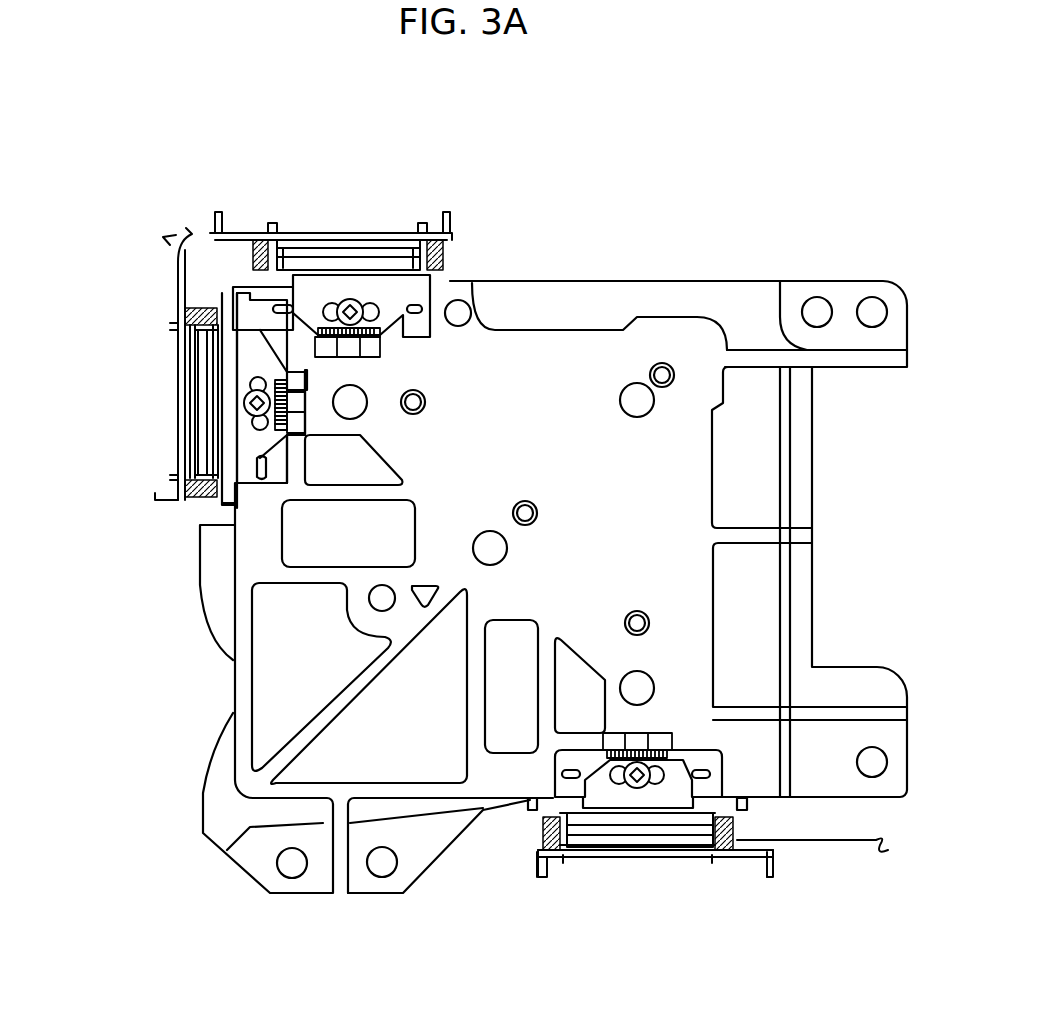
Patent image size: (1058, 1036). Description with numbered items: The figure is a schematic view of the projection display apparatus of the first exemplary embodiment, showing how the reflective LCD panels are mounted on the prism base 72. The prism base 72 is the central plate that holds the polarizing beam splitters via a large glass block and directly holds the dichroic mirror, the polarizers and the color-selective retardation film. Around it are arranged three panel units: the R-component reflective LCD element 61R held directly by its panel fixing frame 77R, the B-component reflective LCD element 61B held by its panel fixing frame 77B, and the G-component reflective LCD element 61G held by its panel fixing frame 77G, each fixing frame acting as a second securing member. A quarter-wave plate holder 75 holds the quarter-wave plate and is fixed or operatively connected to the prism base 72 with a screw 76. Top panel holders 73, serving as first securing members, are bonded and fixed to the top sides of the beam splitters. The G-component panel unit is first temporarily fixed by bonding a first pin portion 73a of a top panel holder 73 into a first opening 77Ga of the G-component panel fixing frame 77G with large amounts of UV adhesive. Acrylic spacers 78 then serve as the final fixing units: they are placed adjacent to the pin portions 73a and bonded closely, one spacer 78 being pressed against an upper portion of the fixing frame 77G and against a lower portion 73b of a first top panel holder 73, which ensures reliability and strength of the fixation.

The prism base 72 is at (647, 333).
The top panel holder 73 is at (362, 298).
The first pin portion 73a is at (553, 863).
The lower portion 73b is at (563, 862).
The quarter-wave plate holder 75 is at (318, 295).
The screw 76 is at (360, 300).
The panel fixing frame 77B is at (340, 247).
The panel fixing frame 77R is at (185, 370).
The panel fixing frame 77G is at (610, 855).
The first opening 77Ga is at (538, 863).
The acrylic spacer 78 is at (262, 240).
The B-component reflective LCD element 61B is at (330, 237).
The R-component reflective LCD element 61R is at (200, 390).
The G-component reflective LCD element 61G is at (647, 853).